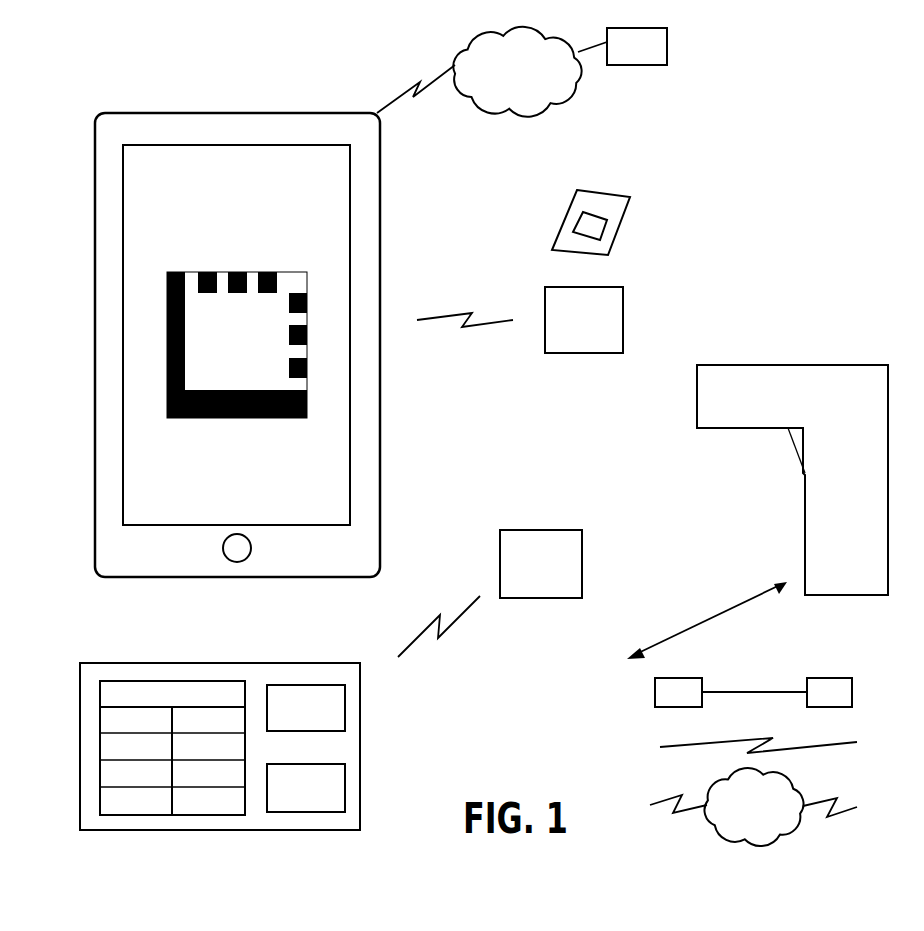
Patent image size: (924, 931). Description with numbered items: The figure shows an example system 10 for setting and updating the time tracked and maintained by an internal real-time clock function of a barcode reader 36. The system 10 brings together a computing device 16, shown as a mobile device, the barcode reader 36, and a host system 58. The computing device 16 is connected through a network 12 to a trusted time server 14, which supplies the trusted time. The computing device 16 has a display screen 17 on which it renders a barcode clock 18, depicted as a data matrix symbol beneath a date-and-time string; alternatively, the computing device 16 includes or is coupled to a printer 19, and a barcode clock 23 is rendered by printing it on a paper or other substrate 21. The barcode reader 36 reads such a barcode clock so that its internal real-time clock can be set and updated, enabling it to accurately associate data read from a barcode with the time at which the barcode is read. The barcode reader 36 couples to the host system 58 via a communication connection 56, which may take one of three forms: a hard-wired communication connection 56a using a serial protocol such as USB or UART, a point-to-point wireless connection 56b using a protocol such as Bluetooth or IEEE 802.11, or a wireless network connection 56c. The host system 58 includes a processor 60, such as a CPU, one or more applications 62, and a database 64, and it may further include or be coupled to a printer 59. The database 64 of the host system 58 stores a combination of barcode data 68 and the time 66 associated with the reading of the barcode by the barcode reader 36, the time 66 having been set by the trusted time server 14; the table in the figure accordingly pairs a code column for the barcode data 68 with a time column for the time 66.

The system 10 is at (802, 90).
The network 12 is at (492, 72).
The trusted time server 14 is at (667, 42).
The computing device 16 is at (380, 262).
The display screen 17 is at (236, 335).
The barcode clock 18 is at (307, 365).
The printer 19 is at (623, 318).
The substrate 21 is at (628, 241).
The barcode clock 23 is at (603, 215).
The barcode reader 36 is at (810, 365).
The communication connection 56 is at (751, 602).
The hard-wired communication connection 56a is at (852, 692).
The point-to-point wireless connection 56b is at (855, 744).
The wireless network connection 56c is at (855, 808).
The host system 58 is at (322, 663).
The printer 59 is at (582, 562).
The processor 60 is at (345, 783).
The application 62 is at (345, 707).
The database 64 is at (148, 681).
The time 66 is at (246, 718).
The barcode data 68 is at (100, 718).